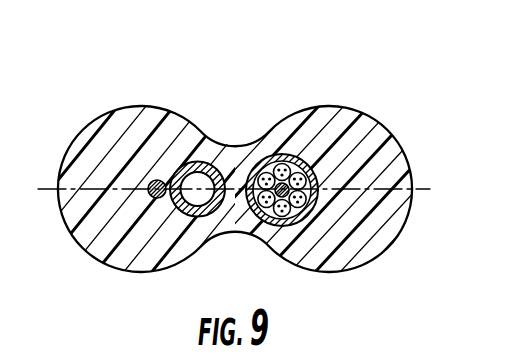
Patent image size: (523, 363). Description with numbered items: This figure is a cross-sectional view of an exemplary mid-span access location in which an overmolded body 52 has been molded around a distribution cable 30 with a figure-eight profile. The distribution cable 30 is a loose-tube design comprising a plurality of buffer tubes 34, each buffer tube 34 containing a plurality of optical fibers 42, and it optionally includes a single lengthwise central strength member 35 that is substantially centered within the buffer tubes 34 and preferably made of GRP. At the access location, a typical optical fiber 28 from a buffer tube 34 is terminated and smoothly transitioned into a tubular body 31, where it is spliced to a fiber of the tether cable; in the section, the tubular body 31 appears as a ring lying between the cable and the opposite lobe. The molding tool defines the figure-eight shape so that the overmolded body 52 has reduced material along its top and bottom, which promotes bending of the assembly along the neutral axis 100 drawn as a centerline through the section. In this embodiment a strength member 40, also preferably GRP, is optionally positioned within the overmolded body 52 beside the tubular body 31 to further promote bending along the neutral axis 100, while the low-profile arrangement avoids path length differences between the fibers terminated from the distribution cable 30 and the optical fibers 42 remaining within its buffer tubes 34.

The neutral axis 100 is at (422, 190).
The overmolded body 52 is at (93, 150).
The tubular body 31 is at (197, 141).
The optical fiber 28 is at (202, 186).
The strength member 40 is at (153, 194).
The central strength member 35 is at (315, 172).
The distribution cable 30 is at (309, 215).
The buffer tube 34 is at (263, 218).
The optical fibers 42 is at (282, 163).